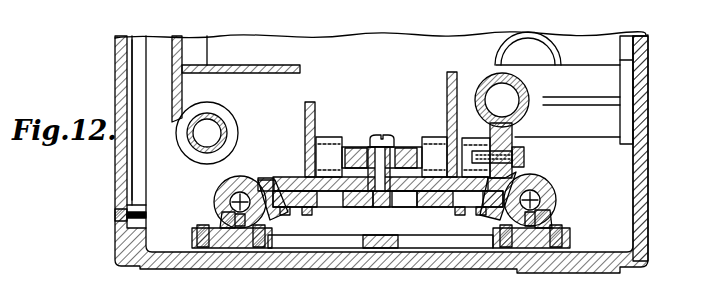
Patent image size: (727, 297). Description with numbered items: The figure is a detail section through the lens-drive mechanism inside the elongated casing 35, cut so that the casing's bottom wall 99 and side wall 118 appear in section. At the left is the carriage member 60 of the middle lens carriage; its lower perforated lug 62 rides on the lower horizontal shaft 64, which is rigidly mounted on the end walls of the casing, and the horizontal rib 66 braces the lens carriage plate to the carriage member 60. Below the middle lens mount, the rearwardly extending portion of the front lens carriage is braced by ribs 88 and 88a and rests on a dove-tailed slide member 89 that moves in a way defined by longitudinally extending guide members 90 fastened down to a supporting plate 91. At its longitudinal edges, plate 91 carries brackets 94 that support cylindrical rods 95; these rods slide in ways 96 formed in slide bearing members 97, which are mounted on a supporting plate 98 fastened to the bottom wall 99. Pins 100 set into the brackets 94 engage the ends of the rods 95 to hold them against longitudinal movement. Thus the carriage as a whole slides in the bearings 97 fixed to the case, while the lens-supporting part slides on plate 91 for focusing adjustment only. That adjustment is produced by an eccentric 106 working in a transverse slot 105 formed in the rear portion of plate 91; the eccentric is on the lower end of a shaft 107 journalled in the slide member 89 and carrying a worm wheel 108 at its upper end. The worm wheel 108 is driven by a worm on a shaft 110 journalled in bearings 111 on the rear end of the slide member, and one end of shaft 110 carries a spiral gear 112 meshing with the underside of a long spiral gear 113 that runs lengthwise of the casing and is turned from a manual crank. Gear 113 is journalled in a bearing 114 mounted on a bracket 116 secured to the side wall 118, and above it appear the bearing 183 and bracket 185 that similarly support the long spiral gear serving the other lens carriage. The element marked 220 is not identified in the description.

The elongated casing 35 is at (650, 234).
The side wall liner 220 is at (117, 66).
The carriage member 60 is at (203, 88).
The perforated lug 62 is at (204, 163).
The lower shaft 64 is at (189, 150).
The horizontal rib 66 is at (281, 73).
The rib 88 is at (315, 103).
The rib 88a is at (447, 88).
The dove-tailed slide member 89 is at (296, 177).
The guide members 90 is at (282, 177).
The supporting plate 91 is at (313, 209).
The brackets 94 is at (280, 216).
The cylindrical rods 95 is at (218, 197).
The ways 96 is at (224, 214).
The slide bearing members 97 is at (222, 201).
The supporting plate 98 is at (383, 249).
The bottom wall 99 is at (420, 263).
The pins 100 is at (245, 185).
The transverse slot 105 is at (404, 208).
The eccentric 106 is at (356, 207).
The shaft 107 is at (369, 207).
The worm wheel 108 is at (379, 135).
The shaft 110 is at (467, 141).
The bearings 111 is at (326, 137).
The spiral gear 112 is at (518, 168).
The long spiral gear 113 is at (524, 113).
The bearing 114 is at (482, 76).
The bracket 116 is at (601, 88).
The side wall 118 is at (643, 121).
The bearing 183 is at (525, 32).
The bracket 185 is at (605, 50).